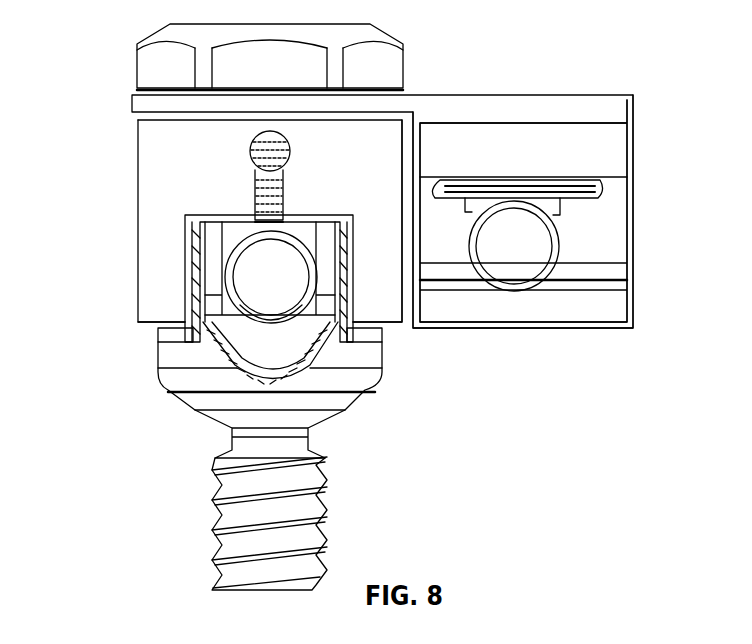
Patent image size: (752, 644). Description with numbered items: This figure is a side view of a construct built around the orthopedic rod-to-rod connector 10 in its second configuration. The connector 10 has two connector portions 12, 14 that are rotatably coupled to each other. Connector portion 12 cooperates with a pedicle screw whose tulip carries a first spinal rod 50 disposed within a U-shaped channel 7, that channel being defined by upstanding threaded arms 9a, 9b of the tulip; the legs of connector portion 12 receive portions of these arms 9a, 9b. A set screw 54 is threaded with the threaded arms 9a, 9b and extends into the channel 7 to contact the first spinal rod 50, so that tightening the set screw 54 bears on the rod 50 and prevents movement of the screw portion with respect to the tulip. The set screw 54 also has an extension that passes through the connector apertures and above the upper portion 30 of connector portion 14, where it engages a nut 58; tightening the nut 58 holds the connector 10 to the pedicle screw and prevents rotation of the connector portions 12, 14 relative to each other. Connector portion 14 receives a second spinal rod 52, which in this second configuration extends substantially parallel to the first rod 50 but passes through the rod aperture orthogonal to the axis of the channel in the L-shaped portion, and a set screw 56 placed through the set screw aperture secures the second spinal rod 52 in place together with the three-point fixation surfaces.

The orthopedic rod-to-rod connector 10 is at (620, 43).
The nut 58 is at (270, 57).
The connector portion 12 is at (270, 231).
The set screw 54 is at (255, 153).
The upstanding threaded arm 9b is at (330, 238).
The upstanding threaded arm 9a is at (215, 287).
The first spinal rod 50 is at (283, 287).
The U-shaped channel 7 is at (265, 352).
The connector portion 14 is at (523, 211).
The upper portion 30 is at (523, 163).
The second spinal rod 52 is at (525, 254).
The set screw 56 is at (590, 179).